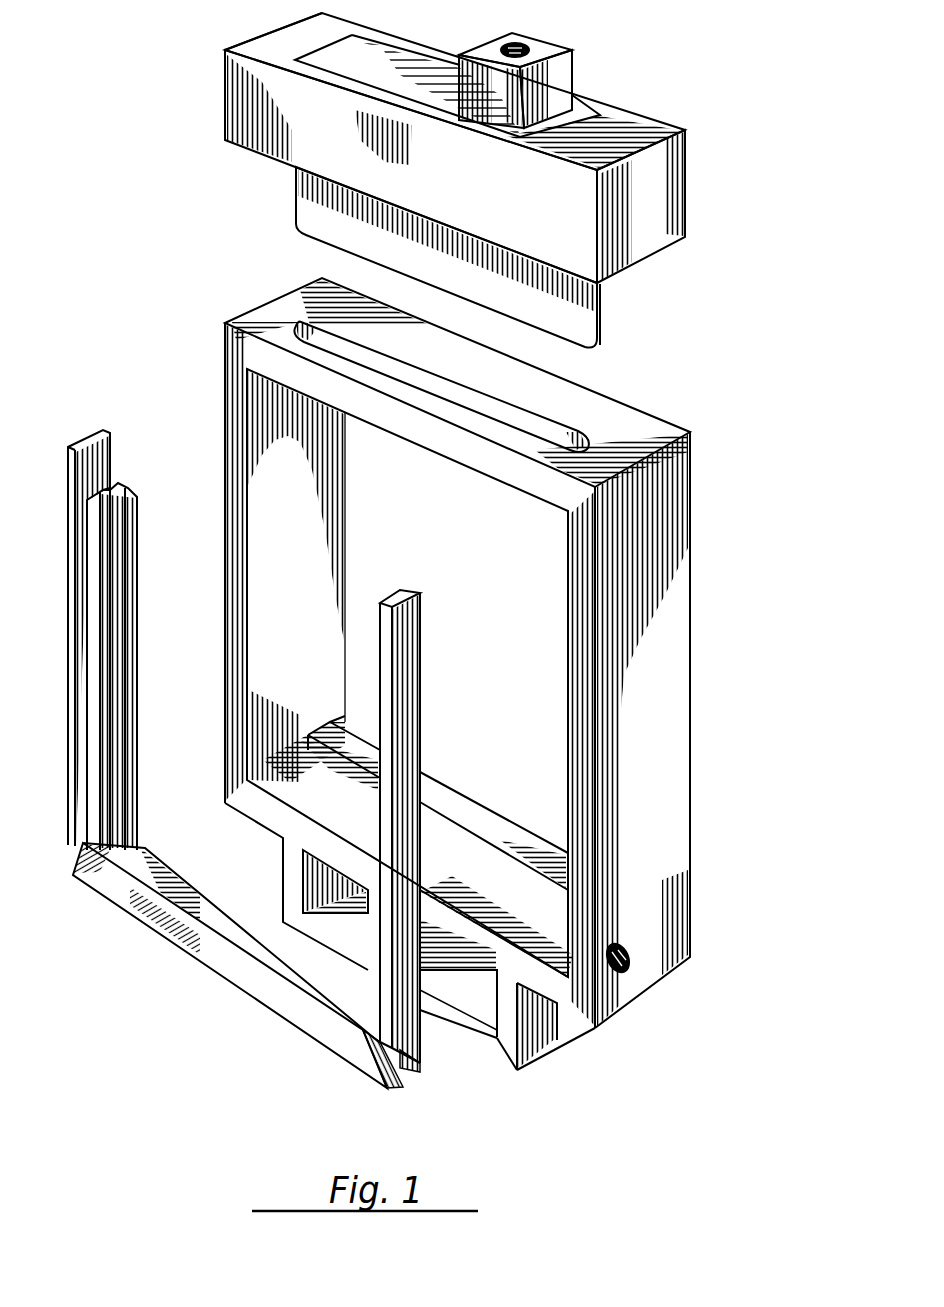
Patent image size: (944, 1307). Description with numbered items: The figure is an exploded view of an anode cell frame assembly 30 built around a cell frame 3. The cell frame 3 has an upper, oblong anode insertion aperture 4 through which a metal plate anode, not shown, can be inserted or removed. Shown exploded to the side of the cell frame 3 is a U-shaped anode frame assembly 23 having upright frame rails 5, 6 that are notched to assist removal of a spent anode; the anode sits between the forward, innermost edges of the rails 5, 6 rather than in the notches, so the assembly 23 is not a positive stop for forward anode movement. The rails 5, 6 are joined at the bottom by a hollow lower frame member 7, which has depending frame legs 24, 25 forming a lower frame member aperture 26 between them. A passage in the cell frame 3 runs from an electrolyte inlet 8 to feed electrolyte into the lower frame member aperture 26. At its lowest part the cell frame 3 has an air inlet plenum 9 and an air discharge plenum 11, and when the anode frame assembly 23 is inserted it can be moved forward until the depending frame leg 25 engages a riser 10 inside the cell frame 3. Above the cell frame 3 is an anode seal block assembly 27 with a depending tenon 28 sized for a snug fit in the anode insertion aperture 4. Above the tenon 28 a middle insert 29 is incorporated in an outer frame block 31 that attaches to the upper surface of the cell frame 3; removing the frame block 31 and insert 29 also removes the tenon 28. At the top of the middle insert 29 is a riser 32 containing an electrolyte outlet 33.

The cell frame 3 is at (445, 371).
The anode insertion aperture 4 is at (482, 387).
The upright frame rail 5 is at (137, 555).
The upright frame rail 6 is at (372, 660).
The lower frame member 7 is at (230, 965).
The electrolyte inlet 8 is at (659, 981).
The air inlet plenum 9 is at (503, 1046).
The riser 10 is at (415, 803).
The air discharge plenum 11 is at (317, 885).
The anode frame assembly 23 is at (140, 940).
The depending frame leg 24 is at (395, 1088).
The depending frame leg 25 is at (404, 1068).
The lower frame member aperture 26 is at (420, 1067).
The anode seal block assembly 27 is at (188, 105).
The tenon 28 is at (325, 220).
The middle insert 29 is at (253, 41).
The anode cell frame assembly 30 is at (160, 356).
The outer frame block 31 is at (688, 176).
The riser 32 is at (572, 80).
The electrolyte outlet 33 is at (520, 42).